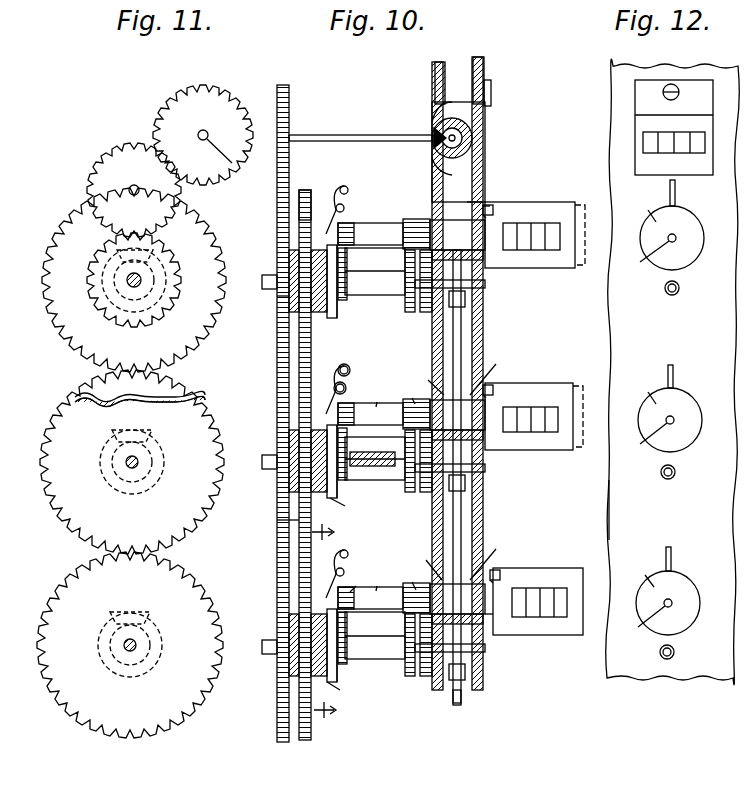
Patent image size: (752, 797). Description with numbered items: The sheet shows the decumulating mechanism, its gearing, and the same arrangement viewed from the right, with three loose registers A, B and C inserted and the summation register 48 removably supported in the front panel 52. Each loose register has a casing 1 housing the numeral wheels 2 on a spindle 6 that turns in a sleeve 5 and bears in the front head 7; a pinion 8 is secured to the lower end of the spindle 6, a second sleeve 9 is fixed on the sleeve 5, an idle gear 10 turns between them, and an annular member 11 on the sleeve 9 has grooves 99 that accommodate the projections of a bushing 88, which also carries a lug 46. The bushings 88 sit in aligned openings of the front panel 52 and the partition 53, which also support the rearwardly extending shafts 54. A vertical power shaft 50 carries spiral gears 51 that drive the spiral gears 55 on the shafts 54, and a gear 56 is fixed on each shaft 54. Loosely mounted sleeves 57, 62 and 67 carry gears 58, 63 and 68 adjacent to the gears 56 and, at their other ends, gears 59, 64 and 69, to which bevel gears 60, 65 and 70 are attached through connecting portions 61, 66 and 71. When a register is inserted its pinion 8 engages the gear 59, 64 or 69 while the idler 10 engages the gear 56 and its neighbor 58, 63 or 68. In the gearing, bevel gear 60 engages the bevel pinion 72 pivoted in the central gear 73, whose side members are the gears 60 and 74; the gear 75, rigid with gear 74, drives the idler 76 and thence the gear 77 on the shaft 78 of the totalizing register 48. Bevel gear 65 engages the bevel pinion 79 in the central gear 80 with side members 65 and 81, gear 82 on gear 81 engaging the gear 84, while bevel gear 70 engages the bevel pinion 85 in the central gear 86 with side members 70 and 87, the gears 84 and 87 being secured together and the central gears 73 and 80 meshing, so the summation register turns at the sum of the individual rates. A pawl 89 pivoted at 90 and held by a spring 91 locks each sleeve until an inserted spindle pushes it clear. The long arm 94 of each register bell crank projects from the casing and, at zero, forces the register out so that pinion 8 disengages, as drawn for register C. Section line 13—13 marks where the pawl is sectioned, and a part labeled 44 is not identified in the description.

In FIG. 10, the casing 1 is at (568, 262).
In FIG. 10, the numeral wheels 2 is at (554, 255).
In FIG. 12, the numeral wheels 2 is at (674, 142).
In FIG. 10, the sleeve 5 is at (377, 226).
In FIG. 12, the spindle 6 is at (651, 428).
In FIG. 12, the front head 7 is at (692, 248).
In FIG. 10, the pinion 8 is at (348, 226).
In FIG. 10, the second sleeve 9 is at (432, 212).
In FIG. 10, the idle gear 10 is at (415, 220).
In FIG. 10, the annular member 11 is at (488, 628).
In FIG. 10, the section line 13— 13 is at (322, 524).
In FIG. 10, the bracket 44 is at (495, 262).
In FIG. 10, the lug 46 is at (480, 200).
In FIG. 10, the summation register 48 is at (478, 128).
In FIG. 12, the summation register 48 is at (645, 125).
In FIG. 10, the shaft 50 is at (456, 704).
In FIG. 10, the spiral gears 51 is at (445, 300).
In FIG. 10, the front panel 52 is at (484, 336).
In FIG. 12, the front panel 52 is at (614, 498).
In FIG. 10, the partition 53 is at (434, 357).
In FIG. 10, the shafts 54 is at (486, 285).
In FIG. 12, the shafts 54 is at (680, 289).
In FIG. 10, the spiral gear 55 is at (462, 300).
In FIG. 10, the gear 56 is at (412, 320).
In FIG. 10, the sleeve 57 is at (369, 275).
In FIG. 10, the gear 58 is at (409, 302).
In FIG. 10, the gear 59 is at (346, 302).
In FIG. 10, the bevel gear 60 is at (326, 318).
In FIG. 10, the connecting portion 61 is at (342, 318).
In FIG. 10, the sleeve 62 is at (358, 452).
In FIG. 10, the gear 63 is at (392, 452).
In FIG. 10, the gear 64 is at (339, 486).
In FIG. 10, the bevel gear 65 is at (322, 498).
In FIG. 10, the connecting portion 66 is at (343, 500).
In FIG. 10, the sleeve 67 is at (356, 640).
In FIG. 10, the gear 68 is at (392, 638).
In FIG. 10, the gear 69 is at (339, 670).
In FIG. 10, the bevel gear 70 is at (320, 680).
In FIG. 10, the connecting piece 71 is at (343, 682).
In FIG. 10, the bevel pinion 72 is at (284, 253).
In FIG. 11, the gear 73 is at (210, 277).
In FIG. 10, the gear 73 is at (305, 194).
In FIG. 10, the gear 74 is at (295, 315).
In FIG. 11, the gear 75 is at (180, 300).
In FIG. 10, the gear 75 is at (277, 300).
In FIG. 11, the idler 76 is at (121, 148).
In FIG. 10, the idler 76 is at (277, 212).
In FIG. 11, the gear 77 is at (222, 100).
In FIG. 10, the gear 77 is at (290, 122).
In FIG. 11, the shaft 78 is at (234, 165).
In FIG. 10, the shaft 78 is at (362, 135).
In FIG. 10, the bevel pinion 79 is at (295, 432).
In FIG. 11, the gear 80 is at (185, 400).
In FIG. 10, the gear 80 is at (303, 392).
In FIG. 10, the gear 81 is at (285, 520).
In FIG. 11, the gear 82 is at (205, 452).
In FIG. 10, the gear 82 is at (283, 482).
In FIG. 11, the gear 84 is at (178, 588).
In FIG. 10, the gear 84 is at (277, 628).
In FIG. 10, the bevel pinion 85 is at (300, 586).
In FIG. 10, the gear 86 is at (306, 742).
In FIG. 10, the gear 87 is at (290, 695).
In FIG. 10, the bushings 88 is at (440, 215).
In FIG. 10, the pawl 89 is at (348, 404).
In FIG. 10, the pivot 90 is at (347, 388).
In FIG. 10, the spring 91 is at (338, 374).
In FIG. 10, the long arm 94 is at (492, 205).
In FIG. 12, the long arm 94 is at (676, 194).
In FIG. 10, the grooves 99 is at (485, 212).